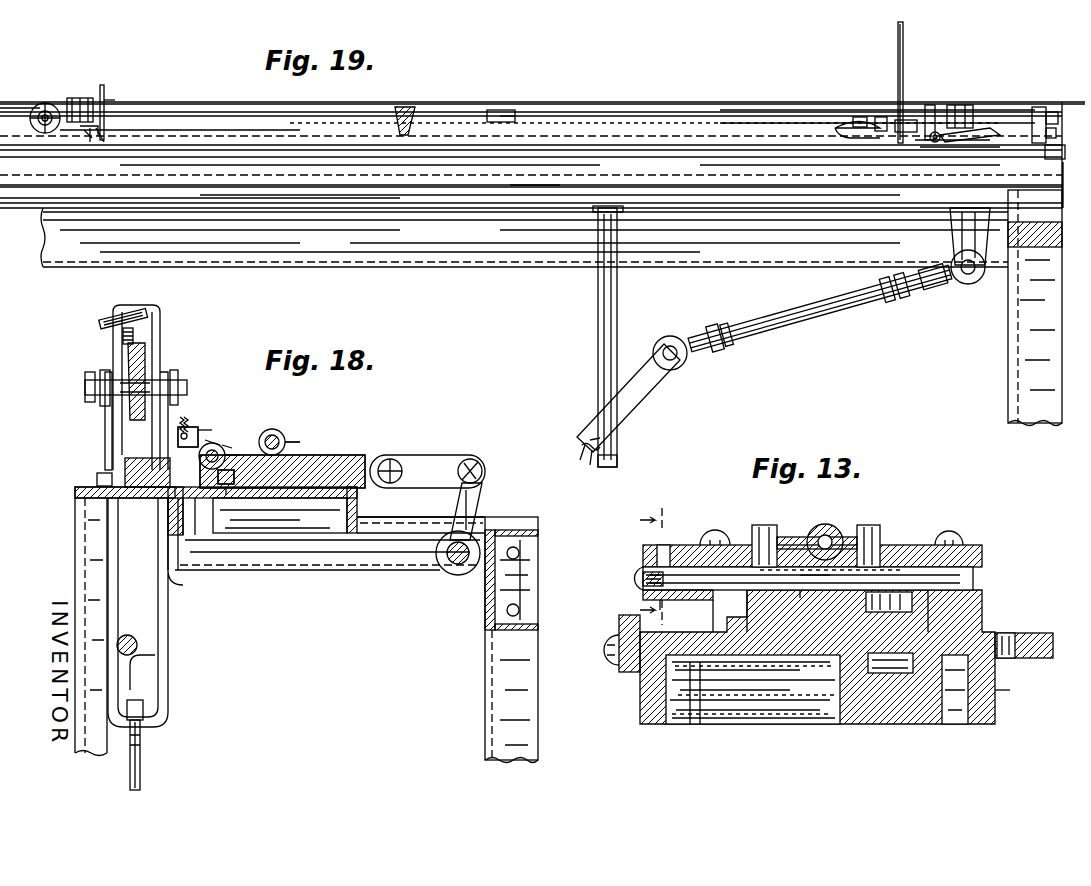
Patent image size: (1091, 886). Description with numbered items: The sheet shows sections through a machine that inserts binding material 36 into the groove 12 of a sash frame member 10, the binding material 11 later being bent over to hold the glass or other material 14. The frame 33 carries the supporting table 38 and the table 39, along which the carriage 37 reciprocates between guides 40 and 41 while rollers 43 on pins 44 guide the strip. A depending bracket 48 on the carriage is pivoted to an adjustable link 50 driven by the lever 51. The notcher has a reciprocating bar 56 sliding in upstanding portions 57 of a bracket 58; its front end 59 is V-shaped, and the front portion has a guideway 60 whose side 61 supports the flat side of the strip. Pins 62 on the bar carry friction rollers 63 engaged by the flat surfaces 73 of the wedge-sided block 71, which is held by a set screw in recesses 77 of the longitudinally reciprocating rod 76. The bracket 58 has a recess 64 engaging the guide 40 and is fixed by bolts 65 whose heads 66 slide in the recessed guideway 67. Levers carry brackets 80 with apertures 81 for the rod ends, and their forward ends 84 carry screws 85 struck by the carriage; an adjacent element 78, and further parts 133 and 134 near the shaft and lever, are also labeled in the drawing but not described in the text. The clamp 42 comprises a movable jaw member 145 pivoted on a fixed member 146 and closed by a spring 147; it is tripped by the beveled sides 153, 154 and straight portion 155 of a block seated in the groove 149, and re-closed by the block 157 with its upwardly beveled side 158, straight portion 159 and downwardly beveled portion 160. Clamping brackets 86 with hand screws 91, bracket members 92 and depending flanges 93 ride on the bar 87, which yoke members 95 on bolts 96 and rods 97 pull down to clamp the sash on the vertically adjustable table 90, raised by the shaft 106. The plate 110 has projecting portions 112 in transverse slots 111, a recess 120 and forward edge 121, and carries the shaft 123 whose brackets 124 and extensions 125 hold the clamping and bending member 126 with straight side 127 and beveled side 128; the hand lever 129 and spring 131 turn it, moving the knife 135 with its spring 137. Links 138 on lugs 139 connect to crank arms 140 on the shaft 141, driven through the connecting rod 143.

In FIG. 18, the frame member 10 is at (97, 480).
In FIG. 18, the binding material 11 is at (215, 443).
In FIG. 18, the groove 12 is at (175, 438).
In FIG. 13, the glass or other material 14 is at (656, 558).
In FIG. 19, the frame 33 is at (1008, 308).
In FIG. 18, the frame 33 is at (485, 668).
In FIG. 19, the binding material 36 is at (20, 92).
In FIG. 13, the binding material 36 is at (663, 560).
In FIG. 19, the carriage 37 is at (535, 187).
In FIG. 13, the supporting table 38 is at (1015, 658).
In FIG. 18, the table 39 is at (350, 533).
In FIG. 13, the guide 40 is at (712, 620).
In FIG. 13, the guide 41 is at (619, 630).
In FIG. 19, the clamp 42 is at (933, 142).
In FIG. 19, the roller 43 is at (70, 98).
In FIG. 19, the pin 44 is at (38, 105).
In FIG. 19, the depending bracket 48 is at (950, 235).
In FIG. 19, the adjustable link 50 is at (880, 300).
In FIG. 19, the lever 51 is at (660, 375).
In FIG. 13, the reciprocating bar 56 is at (905, 567).
In FIG. 13, the upstanding portion 57 is at (690, 545).
In FIG. 13, the bracket 58 is at (975, 640).
In FIG. 13, the front end 59 is at (632, 582).
In FIG. 13, the transverse groove or guideway 60 is at (662, 602).
In FIG. 13, the side 61 is at (680, 600).
In FIG. 13, the pin 62 is at (780, 537).
In FIG. 13, the friction roller 63 is at (754, 525).
In FIG. 13, the recess 64 is at (770, 600).
In FIG. 13, the bolt 65 is at (905, 645).
In FIG. 13, the head 66 is at (930, 668).
In FIG. 13, the recessed guideway 67 is at (1010, 633).
In FIG. 13, the block 71 is at (835, 527).
In FIG. 13, the flat surface 73 is at (813, 599).
In FIG. 19, the longitudinally reciprocating rod 76 is at (755, 110).
In FIG. 18, the longitudinally reciprocating rod 76 is at (301, 441).
In FIG. 13, the longitudinally reciprocating rod 76 is at (815, 579).
In FIG. 19, the recess 77 is at (102, 85).
In FIG. 19, the block 78 is at (965, 105).
In FIG. 18, the block 78 is at (300, 426).
In FIG. 19, the bracket 80 is at (1068, 118).
In FIG. 19, the aperture 81 is at (1040, 107).
In FIG. 19, the forward end 84 is at (1056, 133).
In FIG. 19, the screw 85 is at (1065, 152).
In FIG. 18, the clamping bracket 86 is at (160, 360).
In FIG. 18, the bar 87 is at (128, 360).
In FIG. 18, the vertically adjustable table 90 is at (75, 500).
In FIG. 18, the hand screw 91 is at (100, 325).
In FIG. 18, the bracket member 92 is at (105, 445).
In FIG. 18, the depending flange 93 is at (125, 468).
In FIG. 18, the yoke member 95 is at (168, 650).
In FIG. 18, the bolt 96 is at (190, 417).
In FIG. 18, the rod 97 is at (140, 765).
In FIG. 18, the shaft 106 is at (137, 642).
In FIG. 18, the plate 110 is at (345, 455).
In FIG. 18, the transverse slot 111 is at (230, 495).
In FIG. 18, the downwardly projecting portion 112 is at (357, 493).
In FIG. 18, the recess 120 is at (226, 484).
In FIG. 18, the forward edge 121 is at (183, 530).
In FIG. 18, the shaft or rod 123 is at (275, 425).
In FIG. 19, the bracket 124 is at (502, 110).
In FIG. 18, the bracket 124 is at (248, 455).
In FIG. 19, the extension 125 is at (512, 115).
In FIG. 18, the extension 125 is at (230, 447).
In FIG. 19, the clamping and bending member 126 is at (398, 107).
In FIG. 18, the clamping and bending member 126 is at (215, 443).
In FIG. 18, the straight side 127 is at (165, 545).
In FIG. 18, the beveled or angled side 128 is at (168, 520).
In FIG. 19, the hand lever 129 is at (903, 75).
In FIG. 18, the spring 131 is at (195, 530).
In FIG. 19, the block 133 is at (908, 120).
In FIG. 19, the block 134 is at (932, 105).
In FIG. 19, the knife 135 is at (105, 98).
In FIG. 18, the spring 137 is at (208, 430).
In FIG. 18, the link 138 is at (430, 467).
In FIG. 18, the lug 139 is at (390, 455).
In FIG. 18, the crank arm 140 is at (478, 505).
In FIG. 18, the shaft 141 is at (452, 575).
In FIG. 19, the adjustable link or connecting rod 143 is at (617, 320).
In FIG. 19, the movable jaw member 145 is at (985, 128).
In FIG. 19, the fixed member 146 is at (995, 147).
In FIG. 19, the spring 147 is at (990, 140).
In FIG. 18, the groove 149 is at (235, 453).
In FIG. 19, the beveled side 153 is at (845, 124).
In FIG. 19, the beveled side 154 is at (880, 117).
In FIG. 19, the straight portion 155 is at (858, 117).
In FIG. 19, the block 157 is at (82, 128).
In FIG. 19, the upwardly beveled side 158 is at (98, 130).
In FIG. 19, the straight portion 159 is at (90, 132).
In FIG. 19, the downwardly beveled portion 160 is at (86, 132).